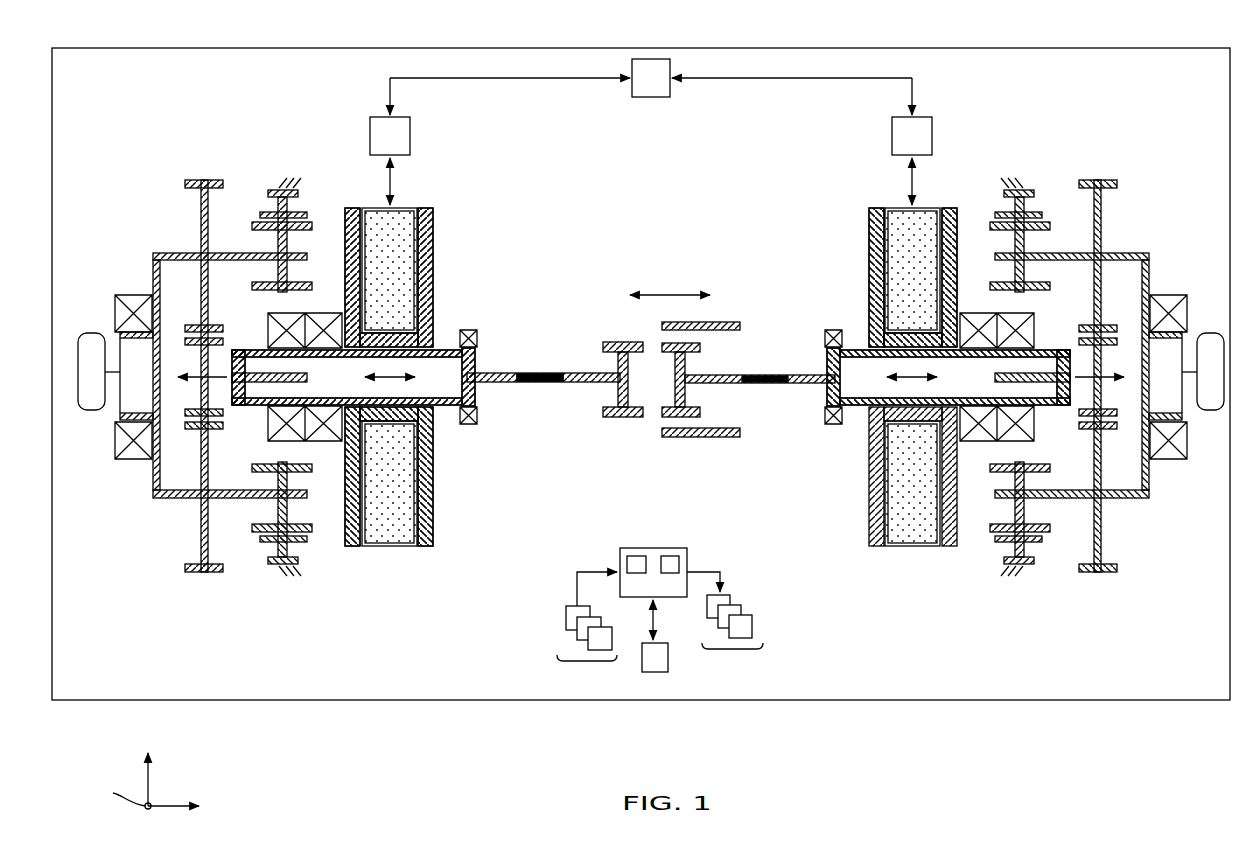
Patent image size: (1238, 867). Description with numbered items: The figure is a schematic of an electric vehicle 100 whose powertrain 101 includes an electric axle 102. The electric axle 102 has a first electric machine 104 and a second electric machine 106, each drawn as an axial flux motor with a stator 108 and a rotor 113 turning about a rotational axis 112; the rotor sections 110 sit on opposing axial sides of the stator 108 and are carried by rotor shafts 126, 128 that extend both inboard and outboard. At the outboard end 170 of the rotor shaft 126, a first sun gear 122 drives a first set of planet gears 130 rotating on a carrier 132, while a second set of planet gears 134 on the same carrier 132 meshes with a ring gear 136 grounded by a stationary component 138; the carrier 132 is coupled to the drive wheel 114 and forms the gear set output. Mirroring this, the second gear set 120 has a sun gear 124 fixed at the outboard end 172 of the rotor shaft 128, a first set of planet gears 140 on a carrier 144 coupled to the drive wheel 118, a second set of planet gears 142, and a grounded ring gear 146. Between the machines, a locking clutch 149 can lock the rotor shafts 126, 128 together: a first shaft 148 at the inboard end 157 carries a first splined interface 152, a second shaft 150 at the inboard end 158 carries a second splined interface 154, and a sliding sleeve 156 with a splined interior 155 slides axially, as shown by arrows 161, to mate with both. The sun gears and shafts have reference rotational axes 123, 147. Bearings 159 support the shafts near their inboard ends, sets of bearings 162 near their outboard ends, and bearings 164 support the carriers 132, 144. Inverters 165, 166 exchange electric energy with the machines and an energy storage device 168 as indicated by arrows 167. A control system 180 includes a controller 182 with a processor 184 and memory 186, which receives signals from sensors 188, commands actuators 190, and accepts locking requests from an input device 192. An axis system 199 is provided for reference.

The electric vehicle 100 is at (93, 47).
The powertrain 101 is at (116, 146).
The electric axle 102 is at (168, 155).
The first electric machine 104 is at (391, 600).
The second electric machine 106 is at (900, 605).
The stator 108 is at (388, 542).
The rotor sections 110 is at (350, 540).
The rotational axes 112 is at (418, 406).
The rotors 113 is at (442, 527).
The drive wheel 114 is at (88, 412).
The drive wheel 118 is at (1213, 412).
The second gear set 120 is at (1089, 148).
The first sun gear 122 is at (190, 342).
The rotational axis 123 is at (190, 380).
The sun gear 124 is at (1113, 342).
The rotor shaft 126 is at (445, 350).
The rotor shaft 128 is at (865, 352).
The first set of planet gears 130 is at (205, 178).
The carrier 132 is at (160, 253).
The second set of planet gears 134 is at (262, 228).
The ring gear 136 is at (263, 212).
The stationary component 138 is at (300, 182).
The first set of planet gears 140 is at (1099, 178).
The second set of planet gears 142 is at (1040, 224).
The carrier 144 is at (1142, 253).
The ring gear 146 is at (1005, 218).
The rotational axis 147 is at (540, 386).
The first shaft 148 is at (571, 386).
The locking clutch 149 is at (613, 271).
The second shaft 150 is at (755, 375).
The first splined interface 152 is at (610, 418).
The second splined interface 154 is at (665, 418).
The splined interior 155 is at (738, 330).
The sliding sleeve 156 is at (734, 304).
The inboard end 157 is at (489, 405).
The inboard end 158 is at (816, 409).
The bearings 159 is at (470, 330).
The arrows 161 is at (668, 293).
The sets of bearings 162 is at (280, 313).
The bearings 164 is at (135, 295).
The inverter 165 is at (500, 141).
The inverter 166 is at (802, 141).
The arrows 167 is at (392, 173).
The energy storage device 168 is at (651, 78).
The outboard end 170 is at (240, 414).
The outboard end 172 is at (1058, 312).
The control system 180 is at (611, 546).
The controller 182 is at (648, 550).
The processor 184 is at (619, 568).
The memory 186 is at (678, 553).
The sensors 188 is at (587, 649).
The actuators 190 is at (732, 637).
The input device 192 is at (656, 673).
The axis system 199 is at (178, 780).